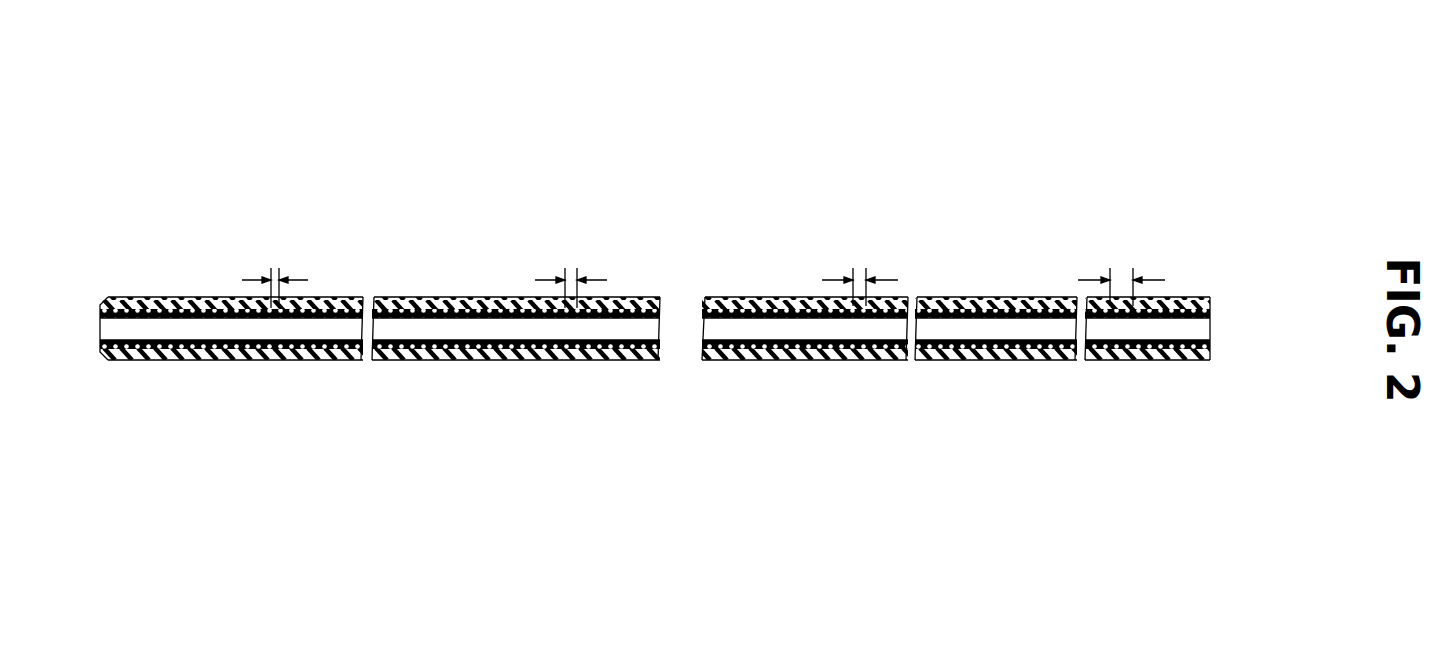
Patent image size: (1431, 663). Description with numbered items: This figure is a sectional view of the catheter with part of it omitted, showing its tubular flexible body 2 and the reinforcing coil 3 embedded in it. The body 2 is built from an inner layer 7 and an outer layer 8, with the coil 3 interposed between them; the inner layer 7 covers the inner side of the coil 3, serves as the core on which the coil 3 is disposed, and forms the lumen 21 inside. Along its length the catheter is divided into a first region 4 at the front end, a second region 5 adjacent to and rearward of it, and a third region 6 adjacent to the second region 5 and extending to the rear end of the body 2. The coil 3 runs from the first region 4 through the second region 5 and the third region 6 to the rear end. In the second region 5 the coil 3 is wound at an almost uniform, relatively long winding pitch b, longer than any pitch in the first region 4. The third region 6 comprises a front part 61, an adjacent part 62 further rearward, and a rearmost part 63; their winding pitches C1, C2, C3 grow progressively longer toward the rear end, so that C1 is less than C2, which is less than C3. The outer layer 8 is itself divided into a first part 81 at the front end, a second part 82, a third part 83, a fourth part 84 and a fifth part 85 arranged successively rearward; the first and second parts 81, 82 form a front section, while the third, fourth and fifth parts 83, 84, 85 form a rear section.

The tubular flexible body 2 is at (830, 172).
The lumen 21 is at (458, 325).
The coil 3 is at (196, 306).
The first region 4 is at (258, 372).
The second region 5 is at (527, 372).
The third region 6 is at (540, 473).
The part 61 is at (808, 372).
The part 62 is at (1025, 372).
The part 63 is at (1207, 372).
The inner layer 7 is at (107, 300).
The outer layer 8 is at (648, 300).
The first part 81 is at (355, 300).
The second part 82 is at (733, 300).
The third part 83 is at (937, 300).
The fourth part 84 is at (1020, 300).
The fifth part 85 is at (1183, 300).
The winding pitch b is at (275, 270).
The winding pitch C1 is at (571, 270).
The winding pitch C2 is at (860, 271).
The winding pitch C3 is at (1121, 269).